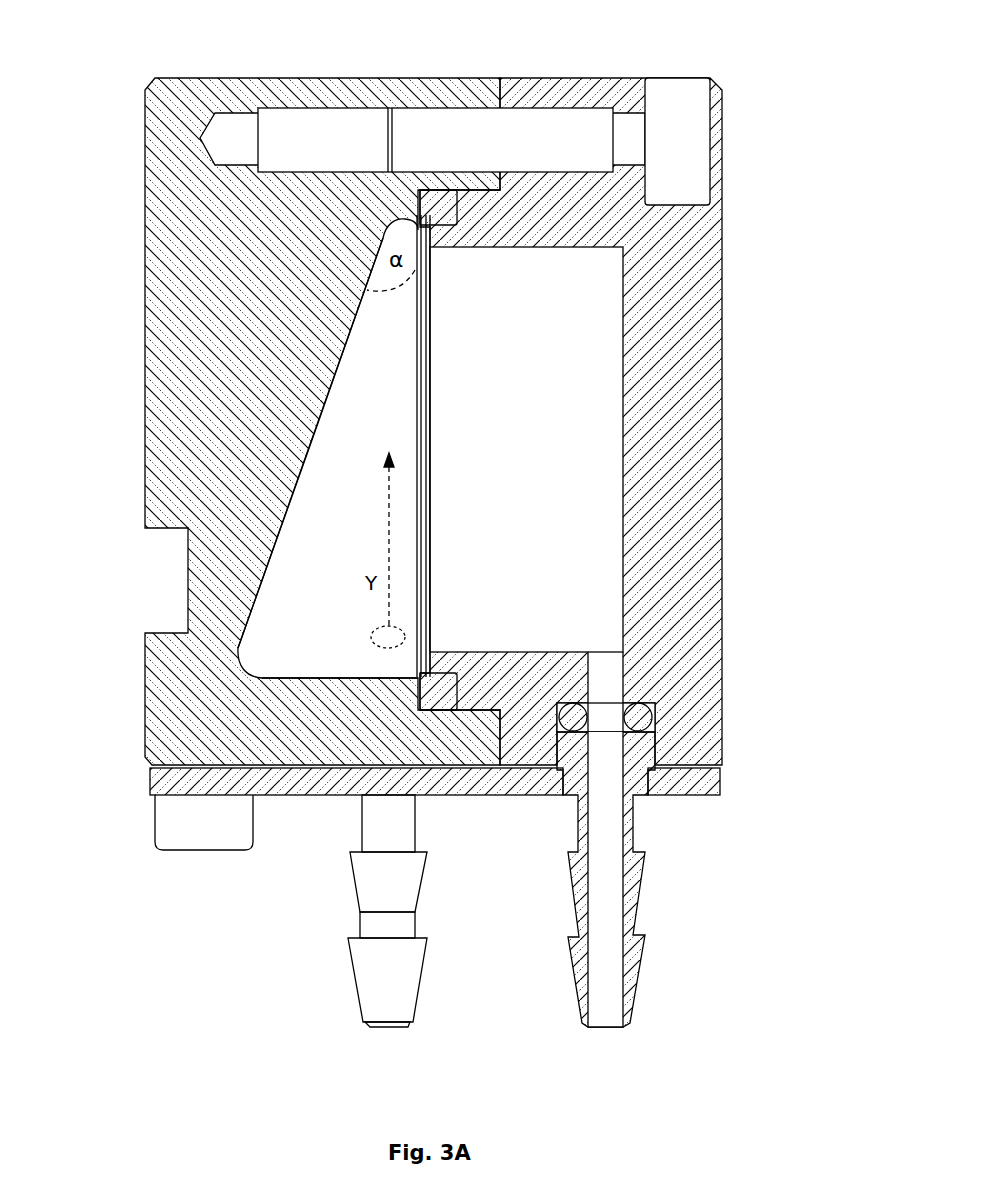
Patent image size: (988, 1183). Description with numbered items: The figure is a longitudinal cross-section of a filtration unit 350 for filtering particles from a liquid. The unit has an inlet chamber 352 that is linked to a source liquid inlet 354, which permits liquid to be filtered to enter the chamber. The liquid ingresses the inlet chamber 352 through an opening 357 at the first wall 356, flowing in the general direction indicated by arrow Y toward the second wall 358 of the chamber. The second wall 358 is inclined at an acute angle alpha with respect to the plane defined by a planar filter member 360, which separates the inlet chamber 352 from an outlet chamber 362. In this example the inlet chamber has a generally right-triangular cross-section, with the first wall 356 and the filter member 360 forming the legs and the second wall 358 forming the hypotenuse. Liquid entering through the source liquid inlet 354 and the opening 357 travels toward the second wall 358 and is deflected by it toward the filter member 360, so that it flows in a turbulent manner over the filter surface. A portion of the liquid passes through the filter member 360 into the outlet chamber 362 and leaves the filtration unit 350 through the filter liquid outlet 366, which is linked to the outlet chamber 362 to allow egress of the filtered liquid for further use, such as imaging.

The filtration unit 350 is at (107, 90).
The inlet chamber 352 is at (304, 599).
The source liquid inlet 354 is at (423, 977).
The first wall 356 is at (318, 673).
The opening 357 is at (371, 633).
The second wall 358 is at (353, 321).
The planar filter member 360 is at (420, 362).
The outlet chamber 362 is at (541, 428).
The filter liquid outlet 366 is at (625, 977).